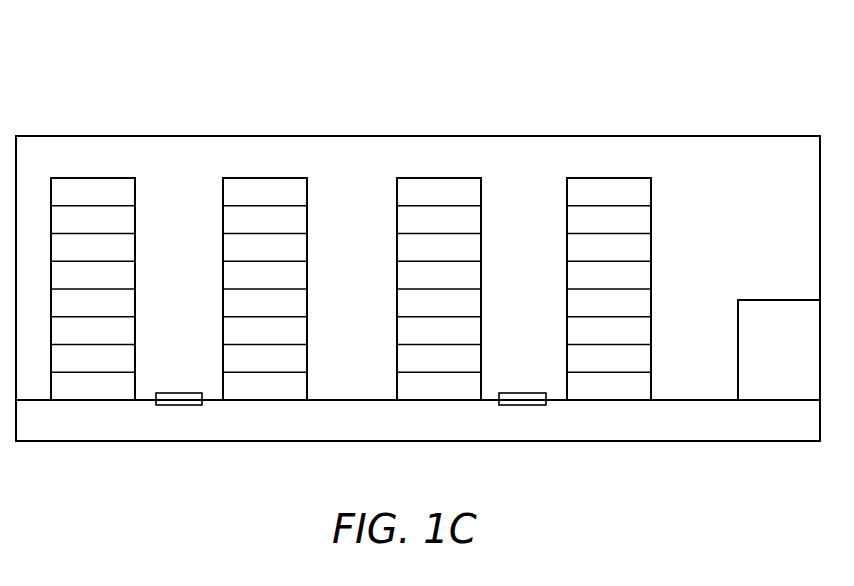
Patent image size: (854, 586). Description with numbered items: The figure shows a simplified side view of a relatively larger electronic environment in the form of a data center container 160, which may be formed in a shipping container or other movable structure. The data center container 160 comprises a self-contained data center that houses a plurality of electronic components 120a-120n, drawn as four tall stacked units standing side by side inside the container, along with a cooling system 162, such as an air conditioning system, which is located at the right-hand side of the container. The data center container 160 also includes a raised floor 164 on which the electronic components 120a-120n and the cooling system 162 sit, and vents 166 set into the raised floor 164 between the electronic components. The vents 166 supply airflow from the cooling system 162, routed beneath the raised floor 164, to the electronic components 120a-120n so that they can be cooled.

The data center container 160 is at (458, 136).
The raised floor 164 is at (700, 400).
The electronic component 120a is at (135, 218).
The electronic component 120n is at (651, 216).
The cooling system 162 is at (738, 315).
The vents 166 is at (180, 405).